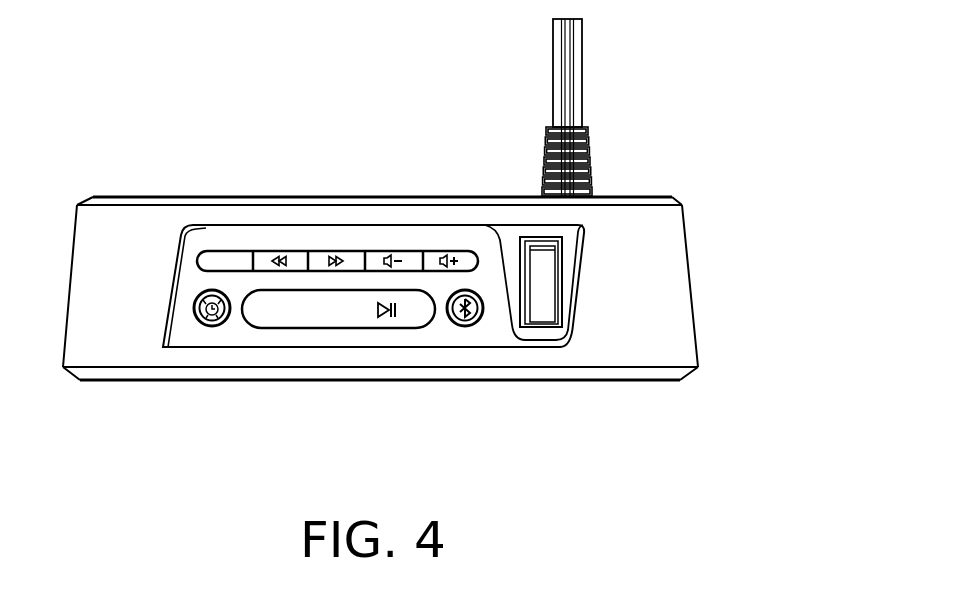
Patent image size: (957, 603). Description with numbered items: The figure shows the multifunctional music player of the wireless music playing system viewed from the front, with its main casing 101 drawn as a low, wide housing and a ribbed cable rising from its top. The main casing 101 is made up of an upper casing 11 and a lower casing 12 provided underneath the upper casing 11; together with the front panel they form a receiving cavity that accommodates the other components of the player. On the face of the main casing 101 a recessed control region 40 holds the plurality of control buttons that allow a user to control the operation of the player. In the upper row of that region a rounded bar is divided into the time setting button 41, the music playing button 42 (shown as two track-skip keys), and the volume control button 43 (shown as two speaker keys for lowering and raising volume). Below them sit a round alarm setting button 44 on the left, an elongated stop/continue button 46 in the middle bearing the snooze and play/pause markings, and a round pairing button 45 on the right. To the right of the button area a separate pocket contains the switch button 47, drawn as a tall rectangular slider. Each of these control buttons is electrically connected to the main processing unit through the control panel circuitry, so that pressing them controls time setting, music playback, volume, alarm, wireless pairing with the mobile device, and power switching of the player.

The main casing 101 is at (672, 164).
The upper casing 11 is at (628, 197).
The lower casing 12 is at (567, 373).
The control panel 40 is at (160, 281).
The time setting button 41 is at (198, 261).
The music playing button 42 is at (270, 258).
The volume control button 43 is at (462, 255).
The alarm setting button 44 is at (205, 328).
The pairing button 45 is at (460, 327).
The stop/continue button 46 is at (337, 328).
The switch button 47 is at (562, 275).